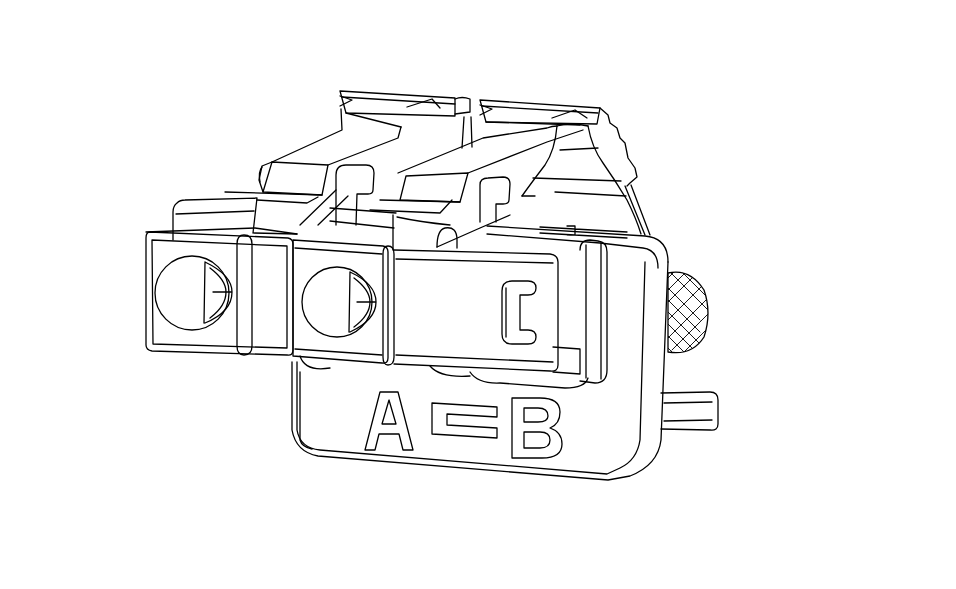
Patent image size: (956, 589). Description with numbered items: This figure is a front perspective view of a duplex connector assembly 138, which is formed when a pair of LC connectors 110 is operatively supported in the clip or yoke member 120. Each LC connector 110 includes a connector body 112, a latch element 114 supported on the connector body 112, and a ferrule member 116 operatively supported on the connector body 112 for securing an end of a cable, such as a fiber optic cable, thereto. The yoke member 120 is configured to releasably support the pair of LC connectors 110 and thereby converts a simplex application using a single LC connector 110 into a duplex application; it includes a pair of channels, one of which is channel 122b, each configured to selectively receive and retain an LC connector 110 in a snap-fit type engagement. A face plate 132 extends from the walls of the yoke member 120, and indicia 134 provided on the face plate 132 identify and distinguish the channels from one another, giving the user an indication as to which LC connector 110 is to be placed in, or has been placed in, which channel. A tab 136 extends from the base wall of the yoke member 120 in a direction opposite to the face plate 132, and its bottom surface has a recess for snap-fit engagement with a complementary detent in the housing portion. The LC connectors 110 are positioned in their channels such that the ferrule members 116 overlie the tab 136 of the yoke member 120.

The duplex connector assembly 138 is at (107, 108).
The LC connector 110 is at (263, 133).
The latch element 114 is at (378, 92).
The connector body 112 is at (157, 353).
The ferrule member 116 is at (700, 283).
The yoke member 120 is at (688, 479).
The channel 122b is at (600, 336).
The face plate 132 is at (307, 422).
The indicia 134 is at (566, 443).
The tab 136 is at (703, 428).